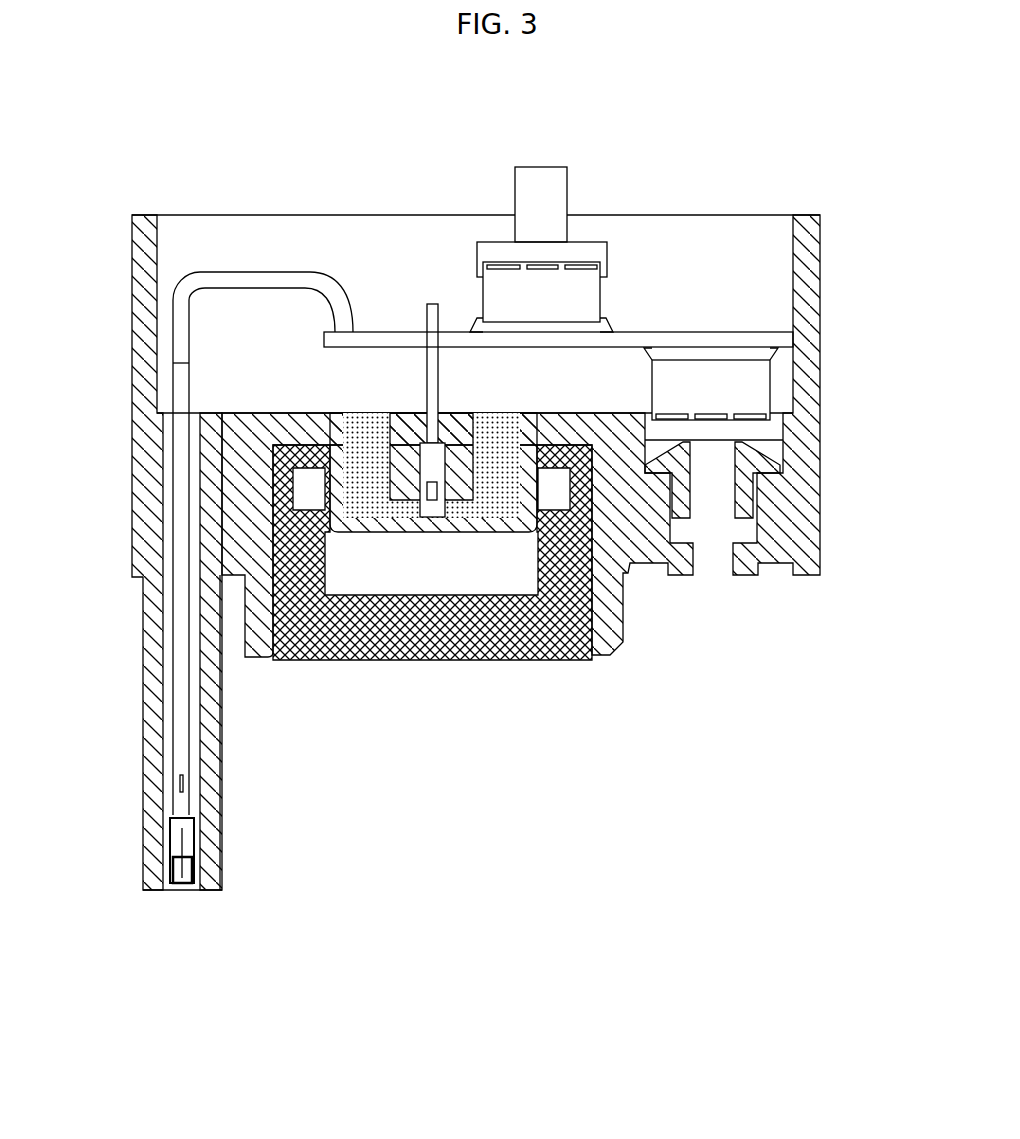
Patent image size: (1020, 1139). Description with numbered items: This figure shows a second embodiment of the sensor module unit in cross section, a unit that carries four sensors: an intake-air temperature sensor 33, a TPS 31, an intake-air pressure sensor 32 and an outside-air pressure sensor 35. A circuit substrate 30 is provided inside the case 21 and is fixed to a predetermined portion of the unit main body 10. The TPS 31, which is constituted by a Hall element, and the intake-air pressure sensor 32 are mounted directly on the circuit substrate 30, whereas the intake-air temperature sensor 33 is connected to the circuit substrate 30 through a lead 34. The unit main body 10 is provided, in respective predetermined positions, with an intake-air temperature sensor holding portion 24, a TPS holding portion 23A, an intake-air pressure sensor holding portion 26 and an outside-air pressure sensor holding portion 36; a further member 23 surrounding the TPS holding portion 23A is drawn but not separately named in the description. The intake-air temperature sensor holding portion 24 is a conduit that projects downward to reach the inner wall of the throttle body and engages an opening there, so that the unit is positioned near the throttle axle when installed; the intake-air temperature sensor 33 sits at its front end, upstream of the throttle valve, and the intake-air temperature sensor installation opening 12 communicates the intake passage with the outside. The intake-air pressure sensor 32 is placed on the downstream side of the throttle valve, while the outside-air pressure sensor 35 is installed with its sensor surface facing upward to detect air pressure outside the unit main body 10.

The unit main body 10 is at (132, 272).
The intake-air temperature sensor installation opening 12 is at (212, 420).
The case 21 is at (815, 295).
The elastic member 23 is at (615, 656).
The TPS holding portion 23A is at (365, 498).
The intake-air temperature sensor holding portion 24 is at (215, 853).
The intake-air pressure sensor holding portion 26 is at (775, 452).
The circuit substrate 30 is at (384, 337).
The TPS 31 is at (445, 452).
The intake-air pressure sensor 32 is at (752, 386).
The intake-air temperature sensor 33 is at (190, 880).
The lead 34 is at (272, 280).
The outside-air pressure sensor 35 is at (540, 167).
The outside-air pressure sensor holding portion 36 is at (600, 322).